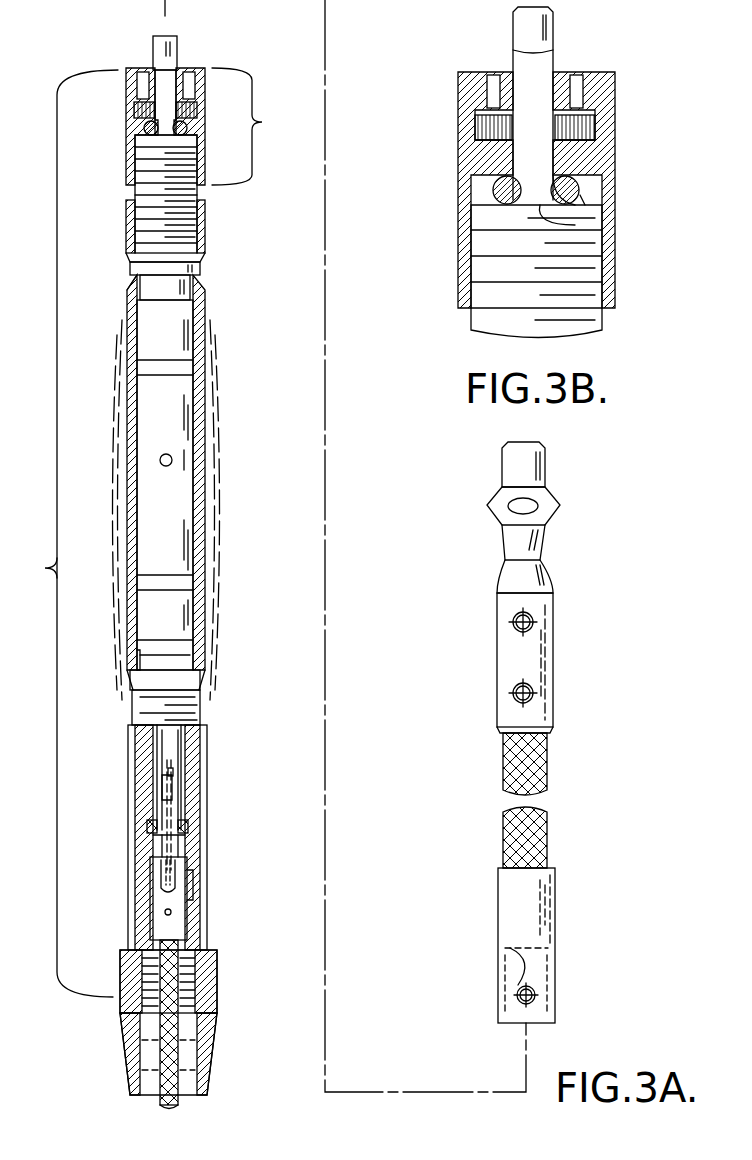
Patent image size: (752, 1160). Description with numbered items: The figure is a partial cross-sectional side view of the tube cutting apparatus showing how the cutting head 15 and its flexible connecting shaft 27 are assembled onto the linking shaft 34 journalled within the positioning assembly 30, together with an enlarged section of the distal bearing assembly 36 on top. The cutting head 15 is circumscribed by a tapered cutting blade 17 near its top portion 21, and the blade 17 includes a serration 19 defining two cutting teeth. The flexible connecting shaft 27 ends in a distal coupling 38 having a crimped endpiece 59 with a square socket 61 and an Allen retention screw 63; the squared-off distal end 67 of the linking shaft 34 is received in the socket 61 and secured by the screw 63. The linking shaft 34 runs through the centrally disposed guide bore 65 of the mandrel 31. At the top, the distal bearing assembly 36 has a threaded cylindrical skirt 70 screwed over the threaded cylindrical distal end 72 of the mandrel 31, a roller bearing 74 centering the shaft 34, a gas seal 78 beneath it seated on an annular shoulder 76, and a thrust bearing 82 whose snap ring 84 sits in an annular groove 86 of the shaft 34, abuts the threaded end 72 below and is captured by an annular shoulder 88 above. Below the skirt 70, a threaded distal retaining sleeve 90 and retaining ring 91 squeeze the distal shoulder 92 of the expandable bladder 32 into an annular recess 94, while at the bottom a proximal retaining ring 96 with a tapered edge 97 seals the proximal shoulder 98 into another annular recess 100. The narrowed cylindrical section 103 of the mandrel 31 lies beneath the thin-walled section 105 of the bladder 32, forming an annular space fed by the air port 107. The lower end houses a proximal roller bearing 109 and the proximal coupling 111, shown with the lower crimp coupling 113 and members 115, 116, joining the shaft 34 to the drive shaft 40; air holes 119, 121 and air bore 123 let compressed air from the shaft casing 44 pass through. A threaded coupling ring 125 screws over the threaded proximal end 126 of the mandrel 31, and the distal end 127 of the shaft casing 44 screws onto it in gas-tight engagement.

In FIG. 3A, the cutting head 15 is at (495, 578).
In FIG. 3A, the cutting blade 17 is at (540, 506).
In FIG. 3A, the serration 19 is at (515, 510).
In FIG. 3A, the top portion 21 is at (512, 470).
In FIG. 3A, the flexible connecting shaft 27 is at (545, 775).
In FIG. 3A, the positioning assembly 30 is at (63, 533).
In FIG. 3A, the mandrel 31 is at (174, 472).
In FIG. 3A, the expandable bladder 32 is at (174, 487).
In FIG. 3A, the linking shaft 34 is at (146, 128).
In FIG. 3B, the linking shaft 34 is at (525, 150).
In FIG. 3A, the distal bearing assembly 36 is at (190, 96).
In FIG. 3B, the distal bearing assembly 36 is at (530, 172).
In FIG. 3A, the distal coupling 38 is at (525, 944).
In FIG. 3A, the drive shaft 40 is at (172, 1050).
In FIG. 3A, the shaft casing 44 is at (205, 1085).
In FIG. 3A, the crimped endpiece 59 is at (542, 897).
In FIG. 3A, the square socket 61 is at (510, 948).
In FIG. 3A, the Allen retention screw 63 is at (532, 990).
In FIG. 3A, the guide bore 65 is at (163, 788).
In FIG. 3A, the distal end 67 is at (171, 47).
In FIG. 3B, the distal end 67 is at (548, 37).
In FIG. 3A, the threaded cylindrical skirt 70 is at (165, 110).
In FIG. 3B, the threaded cylindrical skirt 70 is at (615, 105).
In FIG. 3A, the threaded cylindrical distal end 72 is at (137, 197).
In FIG. 3B, the threaded cylindrical distal end 72 is at (536, 271).
In FIG. 3A, the roller bearing 74 is at (139, 68).
In FIG. 3B, the roller bearing 74 is at (483, 72).
In FIG. 3B, the annular shoulder 76 is at (490, 140).
In FIG. 3B, the gas seal 78 is at (477, 127).
In FIG. 3B, the thrust bearing 82 is at (586, 197).
In FIG. 3B, the snap ring 84 is at (493, 190).
In FIG. 3B, the annular groove 86 is at (535, 218).
In FIG. 3B, the annular shoulder 88 is at (565, 175).
In FIG. 3A, the distal retaining sleeve 90 is at (200, 220).
In FIG. 3A, the ring 91 is at (203, 272).
In FIG. 3A, the distal shoulder 92 is at (135, 290).
In FIG. 3A, the annular recess 94 is at (200, 290).
In FIG. 3A, the proximal retaining ring 96 is at (203, 783).
In FIG. 3A, the tapered edge 97 is at (203, 678).
In FIG. 3A, the proximal shoulder 98 is at (203, 650).
In FIG. 3A, the annular recess 100 is at (128, 655).
In FIG. 3A, the narrowed cylindrical section 103 is at (160, 493).
In FIG. 3A, the thin-walled section 105 is at (128, 438).
In FIG. 3A, the air port 107 is at (172, 458).
In FIG. 3A, the proximal roller bearing 109 is at (190, 833).
In FIG. 3A, the proximal coupling 111 is at (193, 890).
In FIG. 3A, the lower crimp coupling 113 is at (166, 928).
In FIG. 3A, the plunger 115 is at (167, 878).
In FIG. 3A, the contact 116 is at (172, 873).
In FIG. 3A, the air hole 119 is at (171, 913).
In FIG. 3A, the air hole 121 is at (165, 772).
In FIG. 3A, the air bore 123 is at (165, 845).
In FIG. 3A, the threaded coupling ring 125 is at (217, 963).
In FIG. 3A, the threaded proximal end 126 is at (193, 748).
In FIG. 3A, the distal end 127 is at (217, 1020).